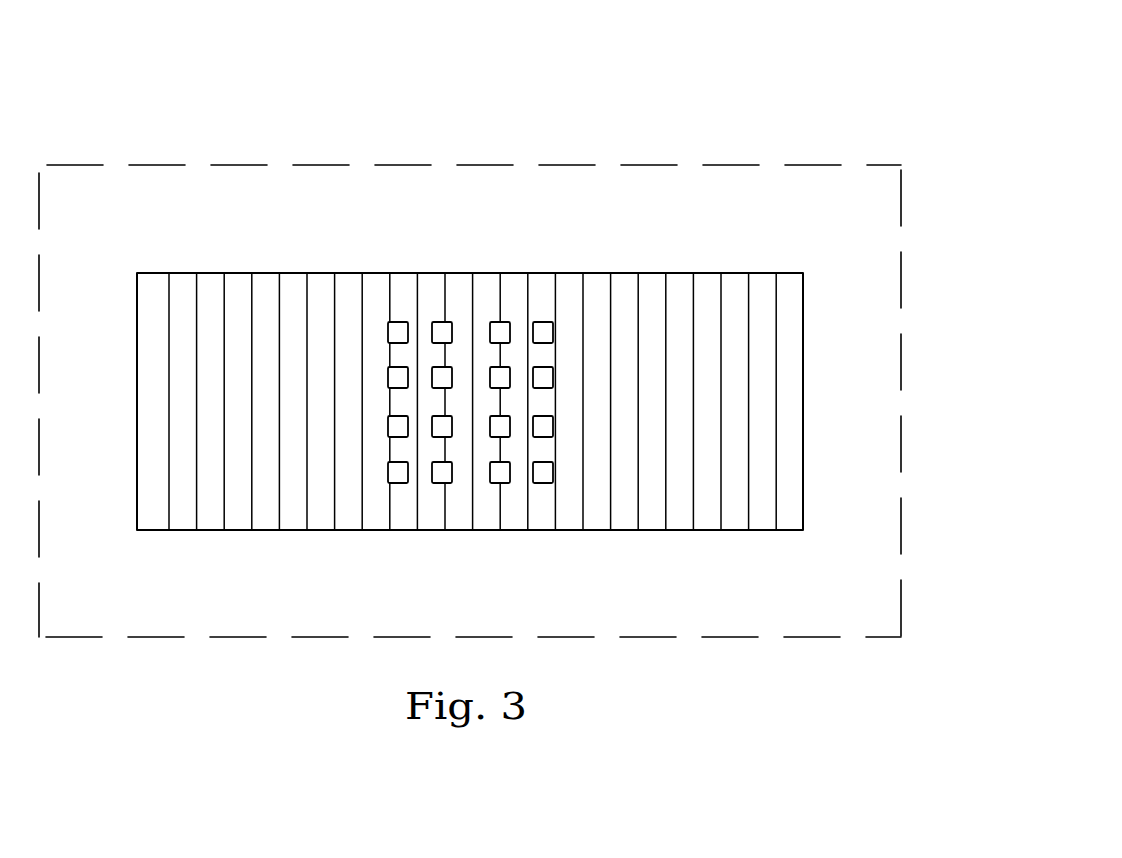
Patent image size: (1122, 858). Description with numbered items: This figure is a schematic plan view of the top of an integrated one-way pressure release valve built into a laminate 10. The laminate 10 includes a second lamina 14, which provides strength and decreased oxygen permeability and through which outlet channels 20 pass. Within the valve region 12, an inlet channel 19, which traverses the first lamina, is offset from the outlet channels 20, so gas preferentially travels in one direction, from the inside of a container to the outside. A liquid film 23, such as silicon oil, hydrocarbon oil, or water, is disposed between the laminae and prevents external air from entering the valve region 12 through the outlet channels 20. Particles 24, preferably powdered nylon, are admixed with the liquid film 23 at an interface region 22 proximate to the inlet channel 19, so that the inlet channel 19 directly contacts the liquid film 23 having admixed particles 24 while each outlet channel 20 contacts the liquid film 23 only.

The laminate 10 is at (729, 136).
The valve region 12 is at (803, 548).
The second lamina 14 is at (842, 597).
The inlet channel 19 is at (445, 402).
The outlet channel 20 is at (289, 402).
The interface region 22 is at (568, 290).
The liquid film 23 is at (757, 345).
The particles 24 is at (440, 476).